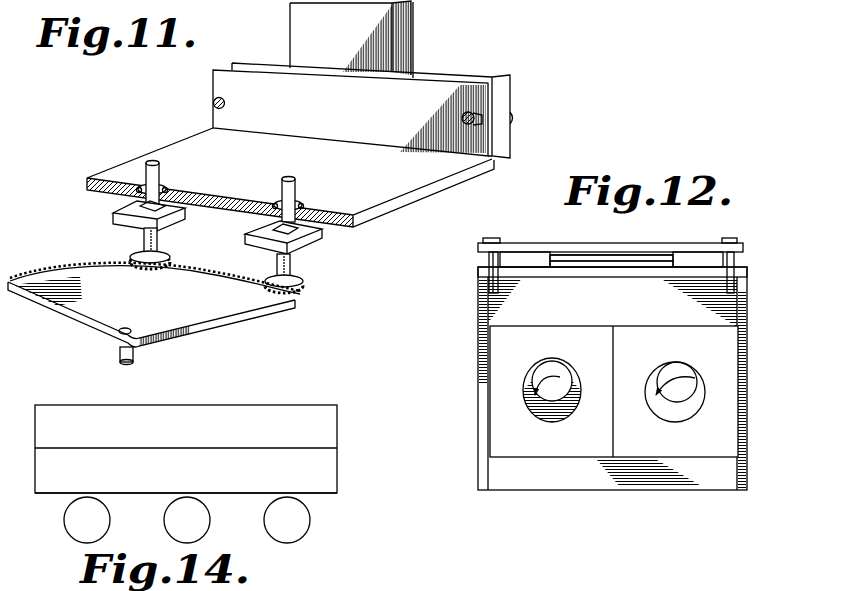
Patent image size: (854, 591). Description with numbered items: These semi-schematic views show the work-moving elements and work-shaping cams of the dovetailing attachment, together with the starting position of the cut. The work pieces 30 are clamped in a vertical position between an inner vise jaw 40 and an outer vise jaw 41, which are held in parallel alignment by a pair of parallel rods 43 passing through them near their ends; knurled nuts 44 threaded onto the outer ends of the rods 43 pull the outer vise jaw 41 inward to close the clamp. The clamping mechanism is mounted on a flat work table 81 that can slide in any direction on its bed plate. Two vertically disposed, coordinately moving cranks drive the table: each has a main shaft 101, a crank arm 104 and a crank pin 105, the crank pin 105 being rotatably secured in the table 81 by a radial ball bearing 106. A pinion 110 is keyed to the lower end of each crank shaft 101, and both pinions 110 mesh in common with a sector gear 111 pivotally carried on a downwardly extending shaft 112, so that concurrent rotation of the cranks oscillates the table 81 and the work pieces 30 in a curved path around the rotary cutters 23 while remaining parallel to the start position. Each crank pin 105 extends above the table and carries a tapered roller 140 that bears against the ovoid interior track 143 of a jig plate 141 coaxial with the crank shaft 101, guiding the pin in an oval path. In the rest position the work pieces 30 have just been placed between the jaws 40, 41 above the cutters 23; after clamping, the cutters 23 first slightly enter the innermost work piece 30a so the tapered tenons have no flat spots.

In FIG. 11, the work pieces 30 is at (305, 20).
In FIG. 12, the work pieces 30 is at (620, 266).
In FIG. 14, the work pieces 30 is at (305, 420).
In FIG. 11, the innermost work piece 30a is at (394, 58).
In FIG. 12, the innermost work piece 30a is at (587, 258).
In FIG. 14, the innermost work piece 30a is at (326, 483).
In FIG. 11, the outer vise jaw 41 is at (240, 65).
In FIG. 12, the outer vise jaw 41 is at (532, 243).
In FIG. 11, the inner vise jaw 40 is at (217, 78).
In FIG. 12, the inner vise jaw 40 is at (523, 278).
In FIG. 11, the parallel rods 43 is at (226, 103).
In FIG. 12, the parallel rods 43 is at (487, 258).
In FIG. 12, the knurled nuts 44 is at (492, 238).
In FIG. 11, the work table 81 is at (400, 202).
In FIG. 12, the work table 81 is at (525, 480).
In FIG. 11, the crank pin 105 is at (143, 172).
In FIG. 11, the radial ball bearing 106 is at (166, 185).
In FIG. 11, the crank arm 104 is at (112, 223).
In FIG. 11, the main shaft 101 is at (155, 237).
In FIG. 11, the pinion 110 is at (163, 258).
In FIG. 11, the sector gear 111 is at (154, 305).
In FIG. 11, the shaft 112 is at (118, 356).
In FIG. 12, the tapered roller 140 is at (559, 375).
In FIG. 12, the interior track 143 is at (536, 413).
In FIG. 12, the jig plate 141 is at (640, 448).
In FIG. 14, the rotary cutters 23 is at (268, 515).